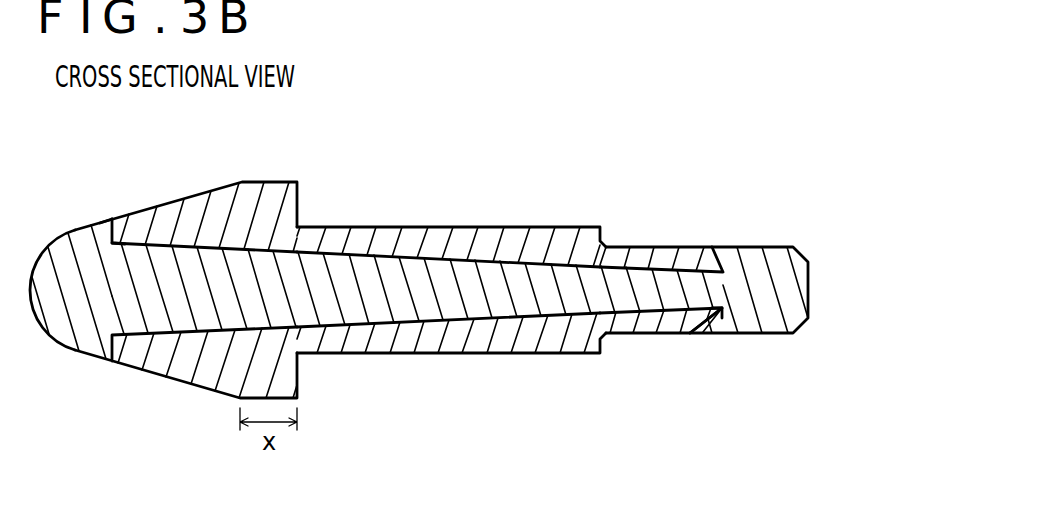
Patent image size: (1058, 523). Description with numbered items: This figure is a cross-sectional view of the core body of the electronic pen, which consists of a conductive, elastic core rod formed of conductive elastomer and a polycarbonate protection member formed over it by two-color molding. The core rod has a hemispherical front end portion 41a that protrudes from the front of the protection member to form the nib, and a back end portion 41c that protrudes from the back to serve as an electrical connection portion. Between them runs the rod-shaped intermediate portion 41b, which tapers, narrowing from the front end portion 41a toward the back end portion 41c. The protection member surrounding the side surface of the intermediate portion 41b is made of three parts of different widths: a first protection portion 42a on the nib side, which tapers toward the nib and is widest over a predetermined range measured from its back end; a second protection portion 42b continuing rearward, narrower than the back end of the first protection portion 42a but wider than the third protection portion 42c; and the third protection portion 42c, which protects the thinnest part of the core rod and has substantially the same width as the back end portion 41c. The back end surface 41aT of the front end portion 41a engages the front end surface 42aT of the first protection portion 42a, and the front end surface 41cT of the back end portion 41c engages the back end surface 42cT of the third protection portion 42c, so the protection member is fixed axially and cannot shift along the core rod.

The front end portion 41a is at (72, 328).
The back end surface 41aT is at (105, 233).
The intermediate portion 41b is at (403, 307).
The back end portion 41c is at (757, 307).
The front end surface 41cT is at (716, 315).
The first protection portion 42a is at (250, 202).
The front end surface 42aT is at (132, 213).
The second protection portion 42b is at (387, 242).
The third protection portion 42c is at (667, 255).
The back end surface 42cT is at (693, 330).